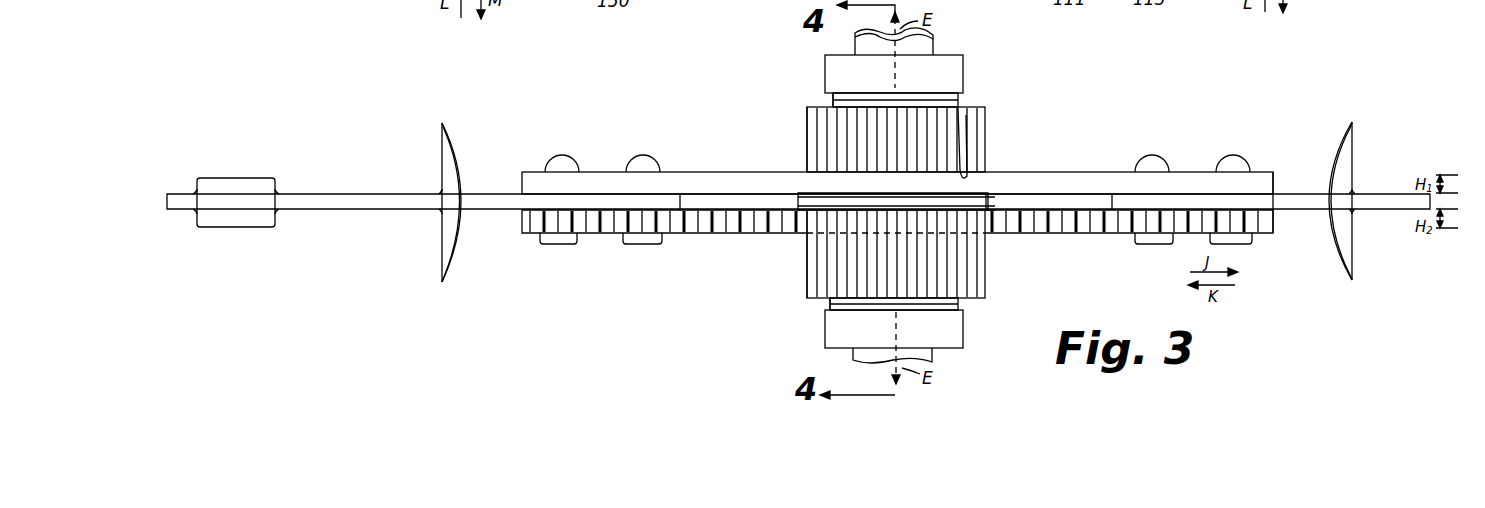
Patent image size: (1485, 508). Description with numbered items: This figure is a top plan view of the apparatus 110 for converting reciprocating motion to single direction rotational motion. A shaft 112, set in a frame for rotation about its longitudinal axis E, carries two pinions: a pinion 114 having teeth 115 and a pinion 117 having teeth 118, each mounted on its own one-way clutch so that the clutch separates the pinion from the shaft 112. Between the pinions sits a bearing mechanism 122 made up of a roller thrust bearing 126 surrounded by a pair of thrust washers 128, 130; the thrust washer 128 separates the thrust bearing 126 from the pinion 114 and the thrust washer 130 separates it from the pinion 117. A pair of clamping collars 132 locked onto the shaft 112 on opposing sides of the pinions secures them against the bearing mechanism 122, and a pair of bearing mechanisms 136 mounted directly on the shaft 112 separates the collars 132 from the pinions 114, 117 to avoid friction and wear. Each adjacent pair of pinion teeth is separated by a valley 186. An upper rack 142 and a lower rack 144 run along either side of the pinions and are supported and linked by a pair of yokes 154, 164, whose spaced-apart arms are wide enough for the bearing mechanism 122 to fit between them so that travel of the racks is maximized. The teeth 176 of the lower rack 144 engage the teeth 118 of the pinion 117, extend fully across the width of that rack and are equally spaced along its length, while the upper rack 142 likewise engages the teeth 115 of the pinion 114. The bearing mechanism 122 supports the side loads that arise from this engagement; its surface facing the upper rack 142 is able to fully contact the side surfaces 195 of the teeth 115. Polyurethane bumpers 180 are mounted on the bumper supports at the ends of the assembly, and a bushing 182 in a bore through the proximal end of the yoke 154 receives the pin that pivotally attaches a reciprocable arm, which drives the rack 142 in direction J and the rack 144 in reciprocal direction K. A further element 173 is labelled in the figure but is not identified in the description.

The apparatus 110 is at (1158, 146).
The shaft 112 is at (932, 355).
The pinion 114 is at (806, 113).
The teeth 115 is at (937, 137).
The pinion 117 is at (806, 283).
The teeth 118 is at (942, 265).
The bearing mechanism 122 is at (797, 203).
The roller thrust bearing 126 is at (990, 202).
The thrust washer 128 is at (988, 197).
The thrust washer 130 is at (990, 212).
The clamping collars 132 is at (963, 62).
The bearing mechanisms 136 is at (828, 101).
The upper rack 142 is at (594, 169).
The lower rack 144 is at (597, 235).
The yoke 154 is at (343, 193).
The yoke 164 is at (1295, 193).
The reference line 173 is at (538, 0).
The teeth 176 is at (713, 233).
The polyurethane bumpers 180 is at (457, 138).
The bushing 182 is at (228, 178).
The valley 186 is at (948, 116).
The side surfaces 195 is at (970, 160).